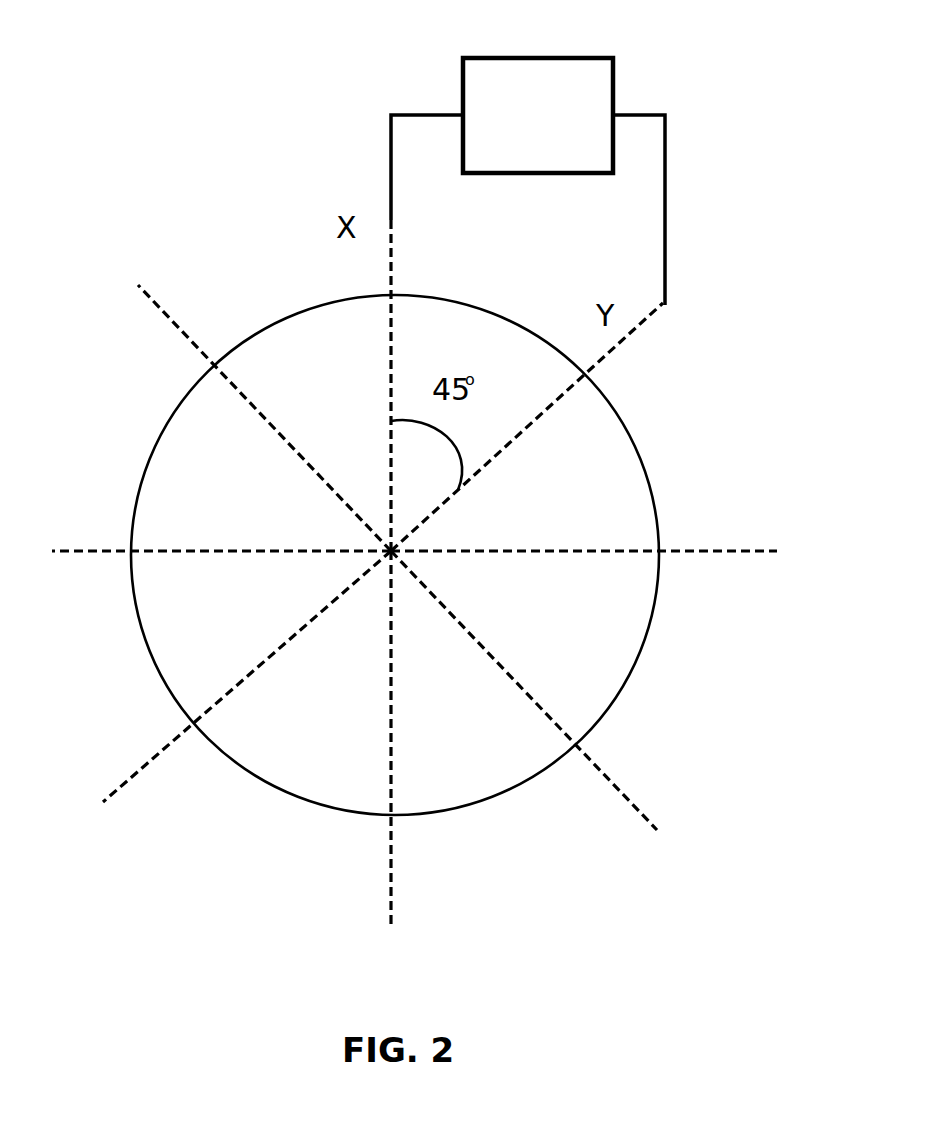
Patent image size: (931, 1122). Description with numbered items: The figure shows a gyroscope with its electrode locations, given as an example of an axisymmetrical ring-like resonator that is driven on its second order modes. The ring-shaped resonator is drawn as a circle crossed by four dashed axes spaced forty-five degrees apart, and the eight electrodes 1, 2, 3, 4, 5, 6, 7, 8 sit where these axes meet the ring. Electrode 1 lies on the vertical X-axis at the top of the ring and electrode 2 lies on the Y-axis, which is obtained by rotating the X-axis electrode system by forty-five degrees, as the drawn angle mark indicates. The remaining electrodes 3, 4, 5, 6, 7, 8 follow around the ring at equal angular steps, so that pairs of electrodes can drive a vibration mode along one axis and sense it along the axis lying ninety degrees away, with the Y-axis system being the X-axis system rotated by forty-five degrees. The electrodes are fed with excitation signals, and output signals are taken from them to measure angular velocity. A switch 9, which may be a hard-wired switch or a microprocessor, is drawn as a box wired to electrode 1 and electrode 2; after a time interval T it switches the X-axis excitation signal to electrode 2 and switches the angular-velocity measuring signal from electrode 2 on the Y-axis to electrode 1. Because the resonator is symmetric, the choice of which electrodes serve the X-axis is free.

The electrode 1 is at (410, 385).
The electrode 2 is at (527, 427).
The electrode 3 is at (584, 578).
The electrode 4 is at (524, 690).
The electrode 5 is at (407, 738).
The electrode 6 is at (247, 676).
The electrode 7 is at (221, 573).
The electrode 8 is at (264, 418).
The switch 9 is at (463, 75).